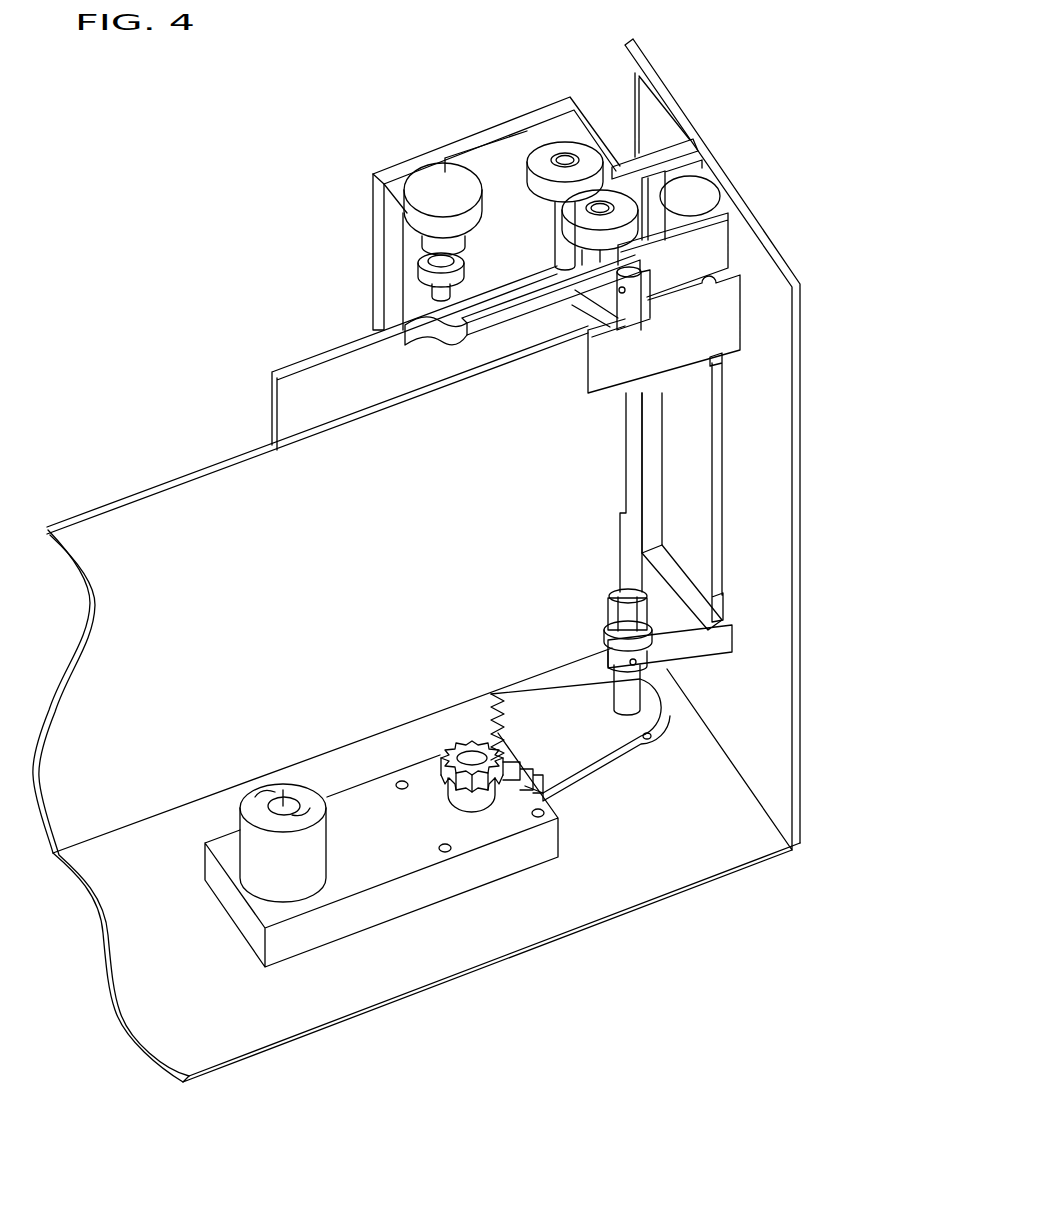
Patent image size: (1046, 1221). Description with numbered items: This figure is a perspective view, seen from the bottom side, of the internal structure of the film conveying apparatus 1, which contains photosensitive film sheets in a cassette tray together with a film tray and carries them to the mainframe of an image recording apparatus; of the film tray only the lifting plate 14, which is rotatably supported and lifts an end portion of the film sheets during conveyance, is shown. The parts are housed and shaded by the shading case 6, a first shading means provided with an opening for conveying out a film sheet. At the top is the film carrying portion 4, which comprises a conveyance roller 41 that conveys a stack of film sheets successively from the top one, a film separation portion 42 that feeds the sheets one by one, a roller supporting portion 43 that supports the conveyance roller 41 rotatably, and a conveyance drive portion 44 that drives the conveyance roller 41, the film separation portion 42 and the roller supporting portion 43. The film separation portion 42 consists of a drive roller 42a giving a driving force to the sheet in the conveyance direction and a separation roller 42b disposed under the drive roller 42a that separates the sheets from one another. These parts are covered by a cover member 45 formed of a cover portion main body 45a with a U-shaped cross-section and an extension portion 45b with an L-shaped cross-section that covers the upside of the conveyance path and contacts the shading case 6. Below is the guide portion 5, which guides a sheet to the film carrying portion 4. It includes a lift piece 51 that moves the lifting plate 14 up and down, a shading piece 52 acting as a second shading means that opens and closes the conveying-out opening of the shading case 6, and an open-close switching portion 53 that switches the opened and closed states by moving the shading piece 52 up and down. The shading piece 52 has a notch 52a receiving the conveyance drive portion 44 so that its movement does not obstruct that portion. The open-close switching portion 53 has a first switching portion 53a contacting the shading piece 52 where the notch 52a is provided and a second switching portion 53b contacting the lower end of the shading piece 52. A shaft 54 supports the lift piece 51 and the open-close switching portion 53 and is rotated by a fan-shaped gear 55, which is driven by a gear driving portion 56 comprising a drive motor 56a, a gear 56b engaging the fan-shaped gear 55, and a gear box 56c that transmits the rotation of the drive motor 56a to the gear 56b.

The film conveying apparatus 1 is at (337, 57).
The film carrying portion 4 is at (519, 108).
The guide portion 5 is at (597, 814).
The shading case 6 is at (658, 74).
The lifting plate 14 is at (288, 362).
The conveyance roller 41 is at (435, 180).
The film separation portion 42 is at (565, 122).
The drive roller 42a is at (593, 145).
The separation roller 42b is at (645, 212).
The roller supporting portion 43 is at (507, 232).
The conveyance drive portion 44 is at (686, 185).
The cover member 45 is at (678, 84).
The cover portion main body 45a is at (376, 176).
The extension portion 45b is at (690, 130).
The lift piece 51 is at (500, 320).
The shading piece 52 is at (694, 430).
The notch 52a is at (745, 362).
The open-close switching portion 53 is at (588, 412).
The first switching portion 53a is at (722, 232).
The lower link arm 53b is at (737, 637).
The shaft 54 is at (630, 478).
The fan-shaped gear 55 is at (518, 707).
The gear driving portion 56 is at (408, 935).
The drive motor 56a is at (305, 788).
The gear 56b is at (500, 780).
The gear box 56c is at (307, 930).